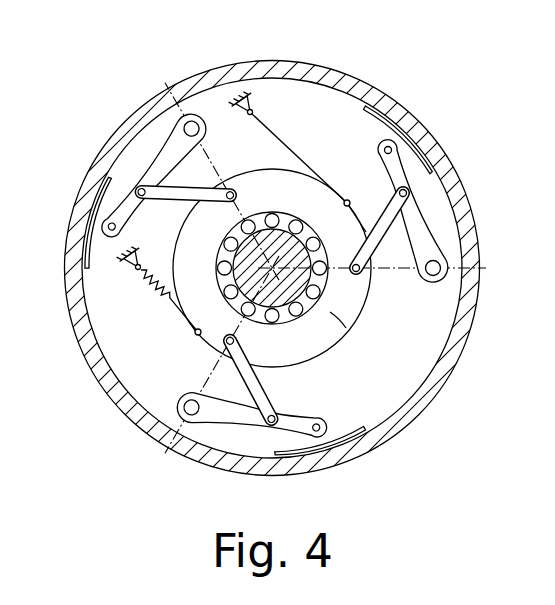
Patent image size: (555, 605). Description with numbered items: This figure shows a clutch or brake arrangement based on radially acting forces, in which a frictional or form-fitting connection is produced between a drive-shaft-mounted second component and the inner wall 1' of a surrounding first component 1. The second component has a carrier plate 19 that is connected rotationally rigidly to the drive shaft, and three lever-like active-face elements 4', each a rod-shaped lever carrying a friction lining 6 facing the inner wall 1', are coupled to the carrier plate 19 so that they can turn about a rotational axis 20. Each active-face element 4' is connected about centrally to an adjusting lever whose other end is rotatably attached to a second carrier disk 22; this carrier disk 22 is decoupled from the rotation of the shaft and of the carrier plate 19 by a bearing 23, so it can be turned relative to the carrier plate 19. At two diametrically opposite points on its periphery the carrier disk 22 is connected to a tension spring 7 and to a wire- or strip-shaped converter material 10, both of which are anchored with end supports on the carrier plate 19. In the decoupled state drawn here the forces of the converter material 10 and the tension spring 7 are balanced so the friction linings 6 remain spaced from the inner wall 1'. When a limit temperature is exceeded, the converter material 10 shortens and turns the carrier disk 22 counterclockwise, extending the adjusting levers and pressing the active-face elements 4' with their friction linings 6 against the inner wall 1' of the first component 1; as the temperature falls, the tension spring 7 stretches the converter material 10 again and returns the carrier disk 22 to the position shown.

The first component 1 is at (277, 302).
The inner wall 1' is at (368, 54).
The lever-like active-face elements 4' is at (291, 291).
The friction linings 6 is at (403, 125).
The tension spring 7 is at (143, 282).
The converter material 10 is at (280, 139).
The carrier plate 19 is at (424, 326).
The rotational axis 20 is at (437, 276).
The second carrier disk 22 is at (341, 321).
The bearing 23 is at (326, 316).